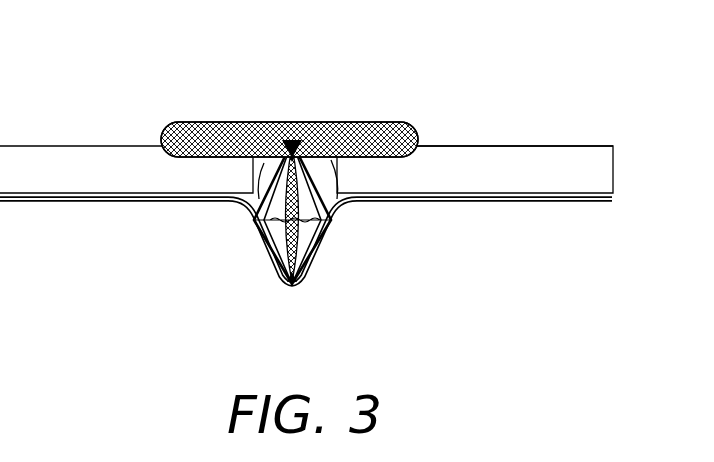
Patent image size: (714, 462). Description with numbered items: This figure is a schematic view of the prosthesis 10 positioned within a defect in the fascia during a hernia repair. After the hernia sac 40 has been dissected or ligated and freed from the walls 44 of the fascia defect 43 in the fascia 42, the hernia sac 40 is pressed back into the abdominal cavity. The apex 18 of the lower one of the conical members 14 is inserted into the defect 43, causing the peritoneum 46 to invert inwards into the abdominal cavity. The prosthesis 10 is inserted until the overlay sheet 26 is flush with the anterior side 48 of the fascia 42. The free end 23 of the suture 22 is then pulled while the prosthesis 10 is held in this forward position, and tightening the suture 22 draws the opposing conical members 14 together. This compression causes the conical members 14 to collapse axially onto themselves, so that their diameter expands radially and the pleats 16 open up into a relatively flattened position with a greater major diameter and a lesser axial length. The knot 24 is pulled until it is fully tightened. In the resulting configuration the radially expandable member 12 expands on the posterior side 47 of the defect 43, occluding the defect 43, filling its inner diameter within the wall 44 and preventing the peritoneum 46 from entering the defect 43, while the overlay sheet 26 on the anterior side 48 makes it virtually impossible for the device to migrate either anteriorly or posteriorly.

The prosthesis 10 is at (455, 99).
The radially expandable member 12 is at (313, 279).
The conical members 14 is at (281, 285).
The pleats 16 is at (256, 247).
The apex 18 is at (298, 292).
The suture 22 is at (257, 124).
The free end 23 is at (300, 93).
The knot 24 is at (295, 142).
The overlay sheet 26 is at (179, 126).
The hernia sac 40 is at (331, 242).
The fascia 42 is at (580, 164).
The fascia defect 43 is at (244, 212).
The walls 44 is at (343, 216).
The peritoneum 46 is at (273, 266).
The posterior side 47 is at (352, 204).
The anterior side 48 is at (574, 145).